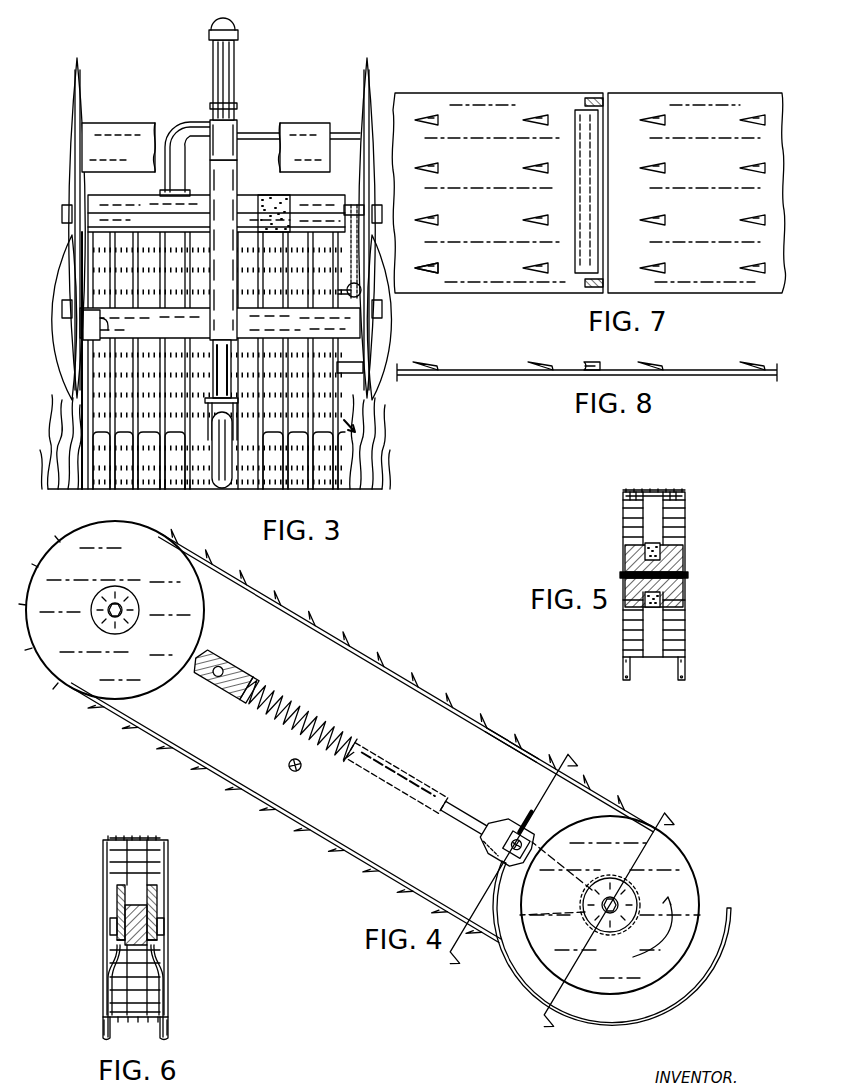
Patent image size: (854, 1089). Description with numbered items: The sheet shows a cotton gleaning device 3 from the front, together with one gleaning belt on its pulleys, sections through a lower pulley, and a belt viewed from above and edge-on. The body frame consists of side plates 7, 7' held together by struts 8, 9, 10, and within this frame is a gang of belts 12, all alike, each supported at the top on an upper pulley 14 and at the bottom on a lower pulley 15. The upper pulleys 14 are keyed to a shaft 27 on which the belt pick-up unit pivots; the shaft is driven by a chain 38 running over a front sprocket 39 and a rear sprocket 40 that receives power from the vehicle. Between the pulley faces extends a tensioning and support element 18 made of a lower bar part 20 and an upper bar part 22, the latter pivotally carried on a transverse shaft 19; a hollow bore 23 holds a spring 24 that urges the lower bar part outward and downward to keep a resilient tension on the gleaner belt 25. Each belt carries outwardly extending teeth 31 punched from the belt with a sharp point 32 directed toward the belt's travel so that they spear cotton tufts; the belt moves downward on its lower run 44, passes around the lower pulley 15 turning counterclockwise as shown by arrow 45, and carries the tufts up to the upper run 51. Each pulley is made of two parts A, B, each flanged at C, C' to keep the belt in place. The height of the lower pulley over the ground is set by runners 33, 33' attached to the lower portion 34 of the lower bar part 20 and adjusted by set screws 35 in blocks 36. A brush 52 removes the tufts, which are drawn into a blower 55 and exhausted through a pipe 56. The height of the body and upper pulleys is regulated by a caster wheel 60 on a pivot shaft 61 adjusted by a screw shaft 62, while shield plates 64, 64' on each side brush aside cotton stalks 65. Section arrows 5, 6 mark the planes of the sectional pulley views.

In FIG. 3, the pipe 56 is at (240, 33).
In FIG. 3, the screw shaft 62 is at (234, 70).
In FIG. 3, the blower 55 is at (230, 130).
In FIG. 3, the strut 8 is at (300, 128).
In FIG. 3, the side plate 7 is at (375, 228).
In FIG. 3, the side plate 7' is at (99, 228).
In FIG. 3, the brush 52 is at (266, 196).
In FIG. 3, the upper pulley 14 is at (82, 248).
In FIG. 4, the upper pulley 14 is at (58, 660).
In FIG. 3, the chain 38 is at (358, 246).
In FIG. 4, the chain 38 is at (545, 995).
In FIG. 3, the sprocket 39 is at (356, 268).
In FIG. 3, the sprocket 40 is at (359, 286).
In FIG. 3, the shaft 27 is at (343, 276).
In FIG. 4, the shaft 27 is at (122, 612).
In FIG. 3, the shield plate 64 is at (391, 317).
In FIG. 3, the guard disk 64' is at (49, 317).
In FIG. 3, the strut 9 is at (108, 326).
In FIG. 3, the pivot shaft 61 is at (205, 338).
In FIG. 3, the strut 10 is at (348, 373).
In FIG. 4, the strut 10 is at (302, 766).
In FIG. 3, the gleaning device 3 is at (354, 430).
In FIG. 3, the lower pulley 15 is at (88, 436).
In FIG. 4, the lower pulley 15 is at (690, 865).
In FIG. 3, the cotton stalks 65 is at (398, 447).
In FIG. 3, the runner 33 is at (152, 496).
In FIG. 5, the runner 33 is at (701, 669).
In FIG. 6, the runner 33 is at (184, 1024).
In FIG. 3, the runner 33' is at (178, 499).
In FIG. 5, the runner 33' is at (610, 670).
In FIG. 6, the runner 33' is at (87, 1031).
In FIG. 3, the caster wheel 60 is at (222, 489).
In FIG. 3, the gang of belts 12 is at (326, 470).
In FIG. 4, the upper bar part 22 is at (218, 668).
In FIG. 4, the transverse shaft 19 is at (213, 680).
In FIG. 4, the hollow bore 23 is at (262, 690).
In FIG. 4, the spring 24 is at (290, 706).
In FIG. 4, the tensioning and support element 18 is at (328, 722).
In FIG. 7, the sharp point 32 is at (530, 265).
In FIG. 8, the sharp point 32 is at (540, 371).
In FIG. 5, the sharp point 32 is at (632, 490).
In FIG. 6, the sharp point 32 is at (128, 838).
In FIG. 4, the sharp point 32 is at (312, 626).
In FIG. 7, the teeth 31 is at (535, 272).
In FIG. 8, the teeth 31 is at (540, 369).
In FIG. 5, the teeth 31 is at (656, 490).
In FIG. 6, the teeth 31 is at (148, 838).
In FIG. 4, the teeth 31 is at (322, 636).
In FIG. 4, the gleaner belt 25 is at (405, 686).
In FIG. 4, the upper run 51 is at (483, 728).
In FIG. 4, the lower run 44 is at (355, 852).
In FIG. 6, the lower portion 34 is at (157, 920).
In FIG. 4, the lower portion 34 is at (520, 815).
In FIG. 6, the lower bar part 20 is at (143, 910).
In FIG. 4, the lower bar part 20 is at (472, 822).
In FIG. 6, the set screw 35 is at (164, 926).
In FIG. 4, the set screw 35 is at (505, 846).
In FIG. 6, the block 36 is at (152, 940).
In FIG. 4, the block 36 is at (500, 861).
In FIG. 4, the arrow 45 is at (683, 900).
In FIG. 4, the attachment point 5 is at (616, 925).
In FIG. 4, the riding wheel 6 is at (525, 864).
In FIG. 5, the pulley part A is at (622, 520).
In FIG. 5, the pulley part B is at (688, 519).
In FIG. 5, the flange C is at (696, 484).
In FIG. 6, the flange C is at (178, 828).
In FIG. 5, the flange C' is at (610, 486).
In FIG. 6, the flange C' is at (93, 829).